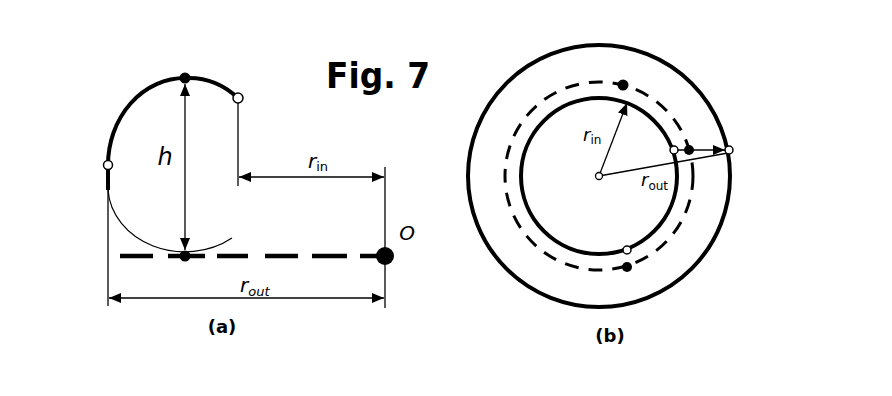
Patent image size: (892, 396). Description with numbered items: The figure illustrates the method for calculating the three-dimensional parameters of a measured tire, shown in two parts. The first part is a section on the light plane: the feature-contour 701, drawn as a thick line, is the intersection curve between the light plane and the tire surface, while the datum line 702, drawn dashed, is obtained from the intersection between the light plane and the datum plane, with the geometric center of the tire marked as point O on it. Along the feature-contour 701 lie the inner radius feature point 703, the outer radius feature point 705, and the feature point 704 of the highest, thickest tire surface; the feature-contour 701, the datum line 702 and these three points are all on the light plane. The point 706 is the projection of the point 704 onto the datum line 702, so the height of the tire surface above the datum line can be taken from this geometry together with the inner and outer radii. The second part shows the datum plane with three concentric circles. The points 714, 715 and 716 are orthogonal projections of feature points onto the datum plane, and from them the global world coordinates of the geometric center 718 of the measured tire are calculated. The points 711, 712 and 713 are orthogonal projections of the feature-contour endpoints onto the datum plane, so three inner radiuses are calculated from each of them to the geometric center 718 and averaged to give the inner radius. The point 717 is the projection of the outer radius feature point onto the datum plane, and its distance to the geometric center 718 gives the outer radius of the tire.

The feature-contour 701 is at (138, 87).
The datum line 702 is at (287, 252).
The inner radius feature point 703 is at (261, 103).
The feature point of the highest tire surface 704 is at (185, 61).
The outer radius feature point 705 is at (84, 165).
The projection of point 704 onto the datum line 706 is at (190, 271).
The projection of feature-contour endpoint on the datum plane 711 is at (697, 262).
The projection of feature-contour endpoint on the datum plane 712 is at (625, 106).
The projection of feature-contour endpoint on the datum plane 713 is at (677, 146).
The projection of feature point on the datum plane 714 is at (678, 287).
The projection of feature point on the datum plane 715 is at (626, 80).
The projection of feature point on the datum plane 716 is at (692, 147).
The projection of the outer radius feature point on the datum plane 717 is at (733, 156).
The geometric center of the measured tire 718 is at (602, 181).